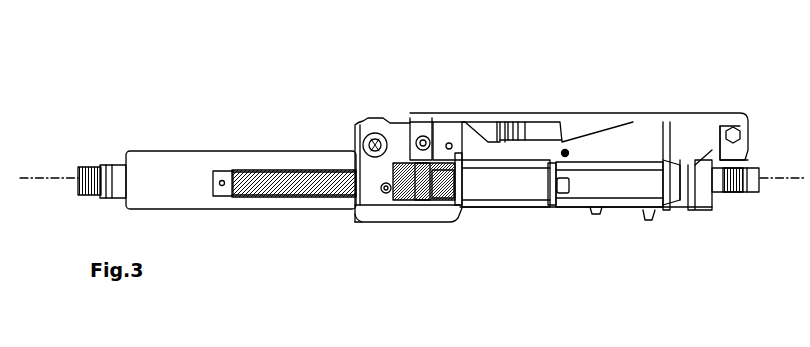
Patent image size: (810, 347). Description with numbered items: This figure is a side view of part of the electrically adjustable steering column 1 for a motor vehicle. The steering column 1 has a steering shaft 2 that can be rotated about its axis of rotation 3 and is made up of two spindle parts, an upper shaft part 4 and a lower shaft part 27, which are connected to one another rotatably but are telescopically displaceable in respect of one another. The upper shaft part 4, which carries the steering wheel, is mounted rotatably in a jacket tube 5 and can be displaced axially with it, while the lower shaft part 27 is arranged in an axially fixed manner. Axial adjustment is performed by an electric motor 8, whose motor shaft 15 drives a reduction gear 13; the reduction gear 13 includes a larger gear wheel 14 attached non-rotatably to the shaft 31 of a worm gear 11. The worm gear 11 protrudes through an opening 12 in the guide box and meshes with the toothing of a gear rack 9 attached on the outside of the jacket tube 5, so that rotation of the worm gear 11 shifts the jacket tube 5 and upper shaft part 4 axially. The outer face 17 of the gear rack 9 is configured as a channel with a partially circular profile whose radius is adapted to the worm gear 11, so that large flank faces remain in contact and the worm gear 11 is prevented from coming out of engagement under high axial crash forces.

The steering column 1 is at (391, 98).
The steering shaft 2 is at (88, 210).
The axis of rotation 3 is at (62, 180).
The upper shaft part 4 is at (110, 175).
The jacket tube 5 is at (173, 170).
The electric motor 8 is at (517, 188).
The gear rack 9 is at (246, 165).
The worm gear 11 is at (428, 200).
The opening 12 is at (400, 200).
The reduction gear 13 is at (441, 217).
The larger gear wheel 14 is at (455, 205).
The motor shaft 15 is at (558, 197).
The outer face 17 is at (280, 170).
The lower shaft part 27 is at (738, 190).
The shaft 31 is at (402, 125).